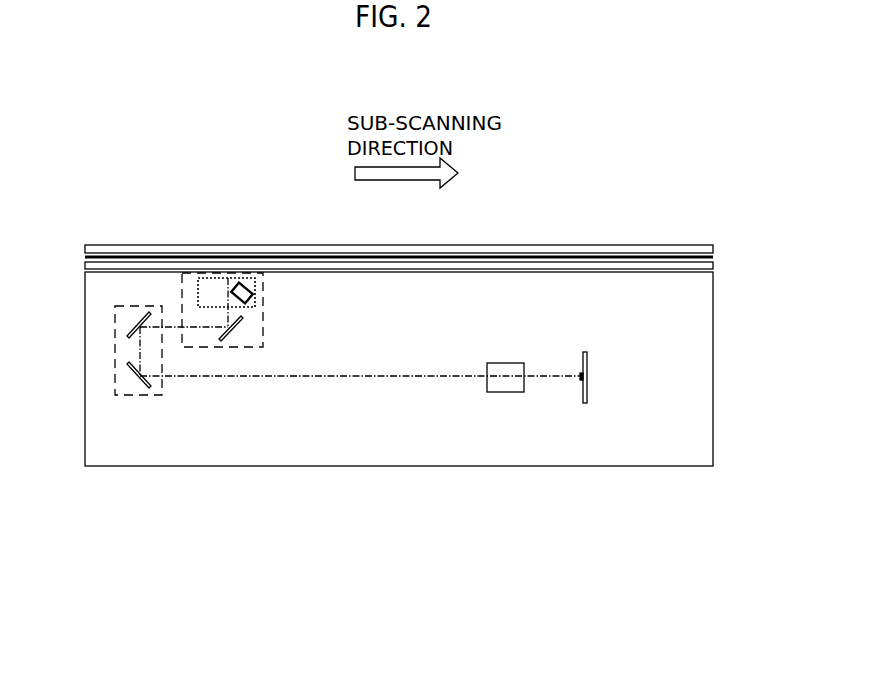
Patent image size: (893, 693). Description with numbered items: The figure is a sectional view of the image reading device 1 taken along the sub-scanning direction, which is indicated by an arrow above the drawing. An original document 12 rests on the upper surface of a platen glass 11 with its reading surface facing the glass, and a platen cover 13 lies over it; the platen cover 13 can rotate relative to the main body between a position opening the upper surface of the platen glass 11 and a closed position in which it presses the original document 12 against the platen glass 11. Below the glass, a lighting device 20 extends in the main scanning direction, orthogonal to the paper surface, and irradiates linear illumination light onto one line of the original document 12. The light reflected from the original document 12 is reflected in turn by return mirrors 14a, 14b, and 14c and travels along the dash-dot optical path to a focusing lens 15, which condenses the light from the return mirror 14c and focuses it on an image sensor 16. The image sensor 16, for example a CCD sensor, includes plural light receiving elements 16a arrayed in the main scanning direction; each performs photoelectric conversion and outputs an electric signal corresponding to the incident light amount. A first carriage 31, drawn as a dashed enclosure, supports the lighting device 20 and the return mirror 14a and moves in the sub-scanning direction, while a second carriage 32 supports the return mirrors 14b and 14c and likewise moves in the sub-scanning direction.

The image reading device 1 is at (372, 468).
The platen glass 11 is at (645, 266).
The original document 12 is at (713, 257).
The platen cover 13 is at (527, 250).
The return mirror 14a is at (237, 323).
The return mirror 14b is at (137, 320).
The return mirror 14c is at (131, 372).
The focusing lens 15 is at (508, 392).
The image sensor 16 is at (587, 383).
The light receiving elements 16a is at (580, 376).
The lighting device 20 is at (258, 290).
The first carriage 31 is at (181, 295).
The second carriage 32 is at (142, 397).